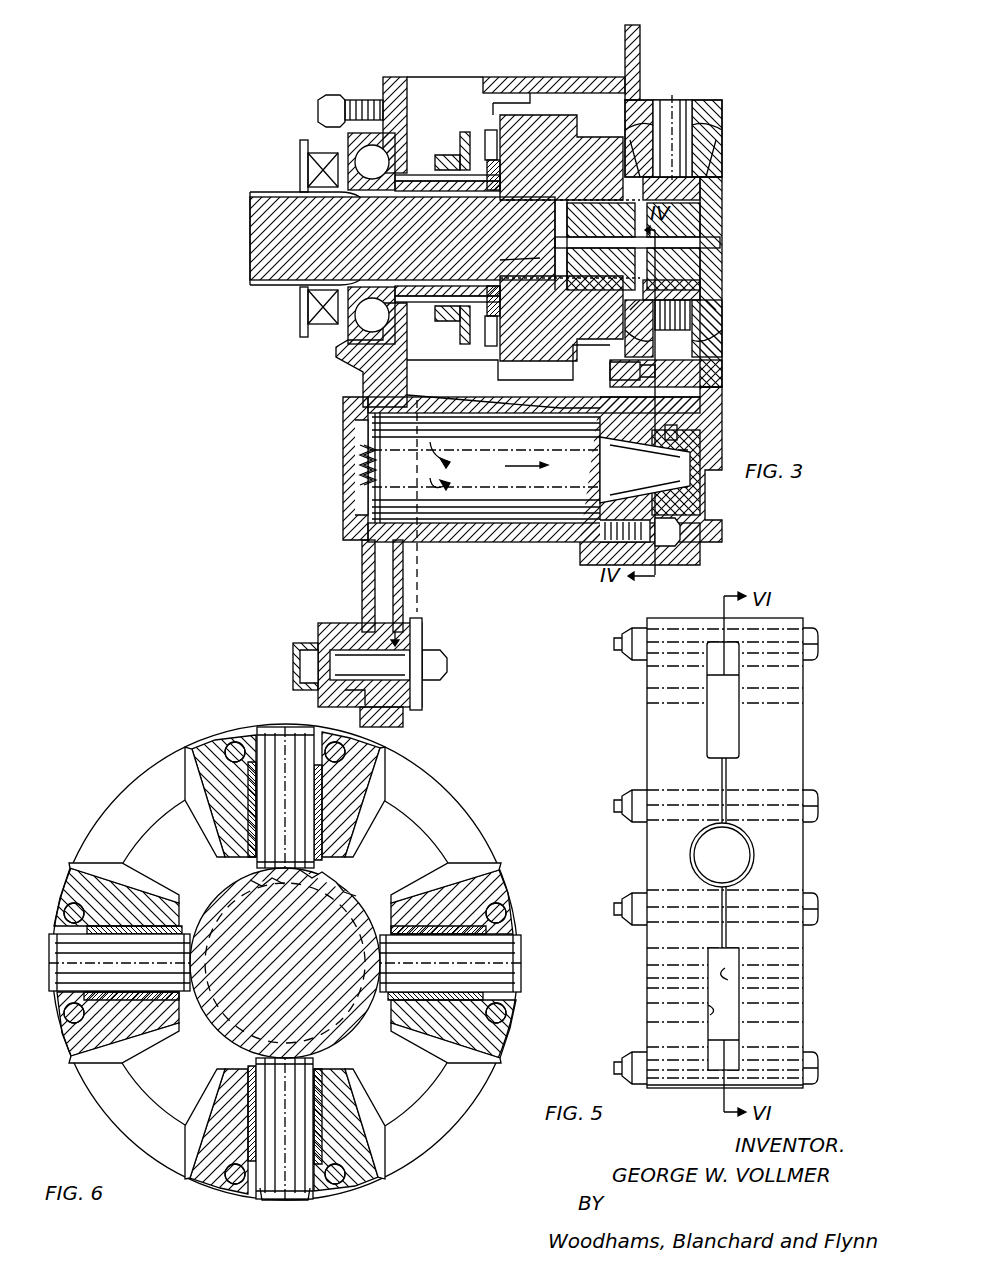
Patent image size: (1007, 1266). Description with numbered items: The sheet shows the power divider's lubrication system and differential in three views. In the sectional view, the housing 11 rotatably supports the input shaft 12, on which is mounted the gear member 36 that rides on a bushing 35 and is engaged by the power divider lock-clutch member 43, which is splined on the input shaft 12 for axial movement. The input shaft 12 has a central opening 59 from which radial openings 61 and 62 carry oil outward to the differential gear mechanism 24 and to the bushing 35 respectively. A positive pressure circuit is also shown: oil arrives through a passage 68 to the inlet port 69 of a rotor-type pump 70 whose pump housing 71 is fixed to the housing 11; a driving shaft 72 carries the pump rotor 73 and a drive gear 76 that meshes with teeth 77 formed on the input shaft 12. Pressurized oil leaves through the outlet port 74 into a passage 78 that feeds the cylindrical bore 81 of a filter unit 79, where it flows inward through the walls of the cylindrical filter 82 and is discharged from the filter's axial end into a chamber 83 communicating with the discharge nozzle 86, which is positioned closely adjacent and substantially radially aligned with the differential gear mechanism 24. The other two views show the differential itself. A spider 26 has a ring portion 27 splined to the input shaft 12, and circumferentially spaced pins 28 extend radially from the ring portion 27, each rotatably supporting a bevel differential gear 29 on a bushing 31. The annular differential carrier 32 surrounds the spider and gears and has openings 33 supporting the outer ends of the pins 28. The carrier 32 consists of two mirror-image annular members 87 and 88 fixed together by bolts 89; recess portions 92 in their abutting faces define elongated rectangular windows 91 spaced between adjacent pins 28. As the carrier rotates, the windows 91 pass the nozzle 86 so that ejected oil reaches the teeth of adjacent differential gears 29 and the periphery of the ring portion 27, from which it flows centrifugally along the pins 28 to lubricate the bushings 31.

In FIG. 3, the housing 11 is at (398, 77).
In FIG. 3, the input shaft 12 is at (278, 228).
In FIG. 6, the input shaft 12 is at (238, 912).
In FIG. 3, the differential gear mechanism 24 is at (707, 92).
In FIG. 6, the differential gear mechanism 24 is at (100, 792).
In FIG. 6, the spider 26 is at (215, 1045).
In FIG. 6, the ring portion 27 is at (348, 1030).
In FIG. 3, the pins 28 is at (676, 107).
In FIG. 6, the pins 28 is at (265, 745).
In FIG. 5, the pins 28 is at (712, 855).
In FIG. 3, the bevel differential gear 29 is at (700, 152).
In FIG. 6, the bevel differential gear 29 is at (205, 790).
In FIG. 6, the bushing 31 is at (70, 1042).
In FIG. 6, the differential carrier 32 is at (495, 893).
In FIG. 5, the differential carrier 32 is at (645, 718).
In FIG. 6, the openings 33 is at (268, 1195).
In FIG. 5, the openings 33 is at (738, 830).
In FIG. 3, the bushing 35 is at (500, 352).
In FIG. 3, the gear member 36 is at (545, 130).
In FIG. 3, the power divider lock-clutch member 43 is at (445, 140).
In FIG. 3, the central opening 59 is at (583, 240).
In FIG. 3, the radial openings 61 is at (635, 255).
In FIG. 3, the radial openings 62 is at (518, 253).
In FIG. 3, the passage 68 is at (392, 716).
In FIG. 3, the inlet port 69 is at (412, 686).
In FIG. 3, the pump 70 is at (305, 698).
In FIG. 3, the pump housing 71 is at (300, 672).
In FIG. 3, the driving shaft 72 is at (447, 665).
In FIG. 3, the pump rotor 73 is at (330, 640).
In FIG. 3, the outlet port 74 is at (405, 640).
In FIG. 3, the drive gear 76 is at (422, 655).
In FIG. 3, the teeth 77 is at (410, 178).
In FIG. 3, the passage 78 is at (380, 585).
In FIG. 3, the filter unit 79 is at (510, 545).
In FIG. 3, the cylindrical bore 81 is at (430, 530).
In FIG. 3, the cylindrical filter 82 is at (388, 475).
In FIG. 3, the chamber 83 is at (690, 490).
In FIG. 3, the nozzle 86 is at (677, 436).
In FIG. 3, the annular member 87 is at (645, 120).
In FIG. 5, the annular member 87 is at (652, 748).
In FIG. 3, the annular member 88 is at (708, 105).
In FIG. 5, the annular member 88 is at (780, 758).
In FIG. 6, the bolts 89 is at (500, 1020).
In FIG. 5, the bolts 89 is at (805, 638).
In FIG. 6, the windows 91 is at (135, 790).
In FIG. 5, the windows 91 is at (730, 720).
In FIG. 5, the recess portions 92 is at (730, 975).